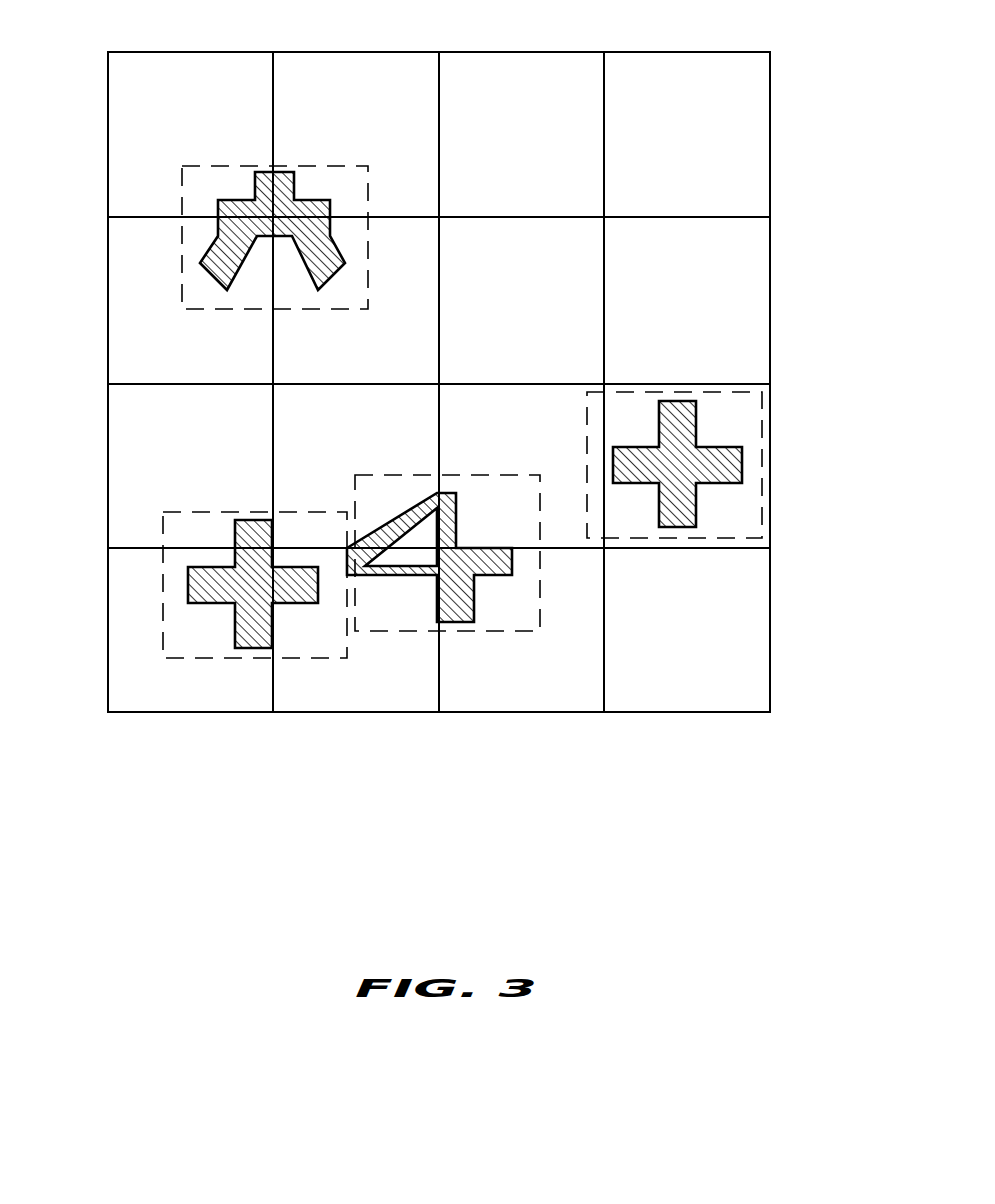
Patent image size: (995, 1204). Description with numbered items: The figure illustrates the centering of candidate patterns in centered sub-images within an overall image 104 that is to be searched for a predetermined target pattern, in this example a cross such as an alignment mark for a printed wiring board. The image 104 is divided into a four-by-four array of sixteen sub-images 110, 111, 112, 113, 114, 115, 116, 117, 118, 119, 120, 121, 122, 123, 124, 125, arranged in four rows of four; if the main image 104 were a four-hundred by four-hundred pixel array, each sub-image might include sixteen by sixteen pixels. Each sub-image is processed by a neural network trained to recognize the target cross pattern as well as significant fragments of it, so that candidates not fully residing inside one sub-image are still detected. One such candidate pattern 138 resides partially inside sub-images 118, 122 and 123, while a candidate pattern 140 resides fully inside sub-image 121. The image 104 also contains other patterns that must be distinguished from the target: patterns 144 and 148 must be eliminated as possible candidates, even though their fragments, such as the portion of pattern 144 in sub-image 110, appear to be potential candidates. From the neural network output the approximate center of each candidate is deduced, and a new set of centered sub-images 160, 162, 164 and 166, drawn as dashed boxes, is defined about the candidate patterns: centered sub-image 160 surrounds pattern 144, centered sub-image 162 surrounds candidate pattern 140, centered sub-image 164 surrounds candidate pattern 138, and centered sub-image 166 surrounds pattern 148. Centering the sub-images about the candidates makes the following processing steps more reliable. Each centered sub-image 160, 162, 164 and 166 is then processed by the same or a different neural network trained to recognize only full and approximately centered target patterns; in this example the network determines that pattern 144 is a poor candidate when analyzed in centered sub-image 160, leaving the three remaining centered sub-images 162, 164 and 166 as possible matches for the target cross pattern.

The image 104 is at (778, 732).
The sub-image 110 is at (147, 72).
The sub-image 111 is at (312, 72).
The sub-image 112 is at (478, 72).
The sub-image 113 is at (643, 72).
The sub-image 114 is at (127, 254).
The sub-image 115 is at (432, 272).
The sub-image 116 is at (587, 272).
The sub-image 117 is at (752, 253).
The sub-image 118 is at (127, 420).
The sub-image 119 is at (420, 438).
The sub-image 120 is at (503, 438).
The sub-image 121 is at (750, 418).
The sub-image 122 is at (218, 693).
The sub-image 123 is at (385, 693).
The sub-image 124 is at (548, 693).
The sub-image 125 is at (715, 693).
The candidate pattern 138 is at (220, 603).
The candidate pattern 140 is at (705, 487).
The pattern 144 is at (267, 170).
The pattern 148 is at (475, 592).
The centered sub-image 160 is at (333, 163).
The centered sub-image 162 is at (760, 510).
The centered sub-image 164 is at (162, 567).
The centered sub-image 166 is at (420, 632).